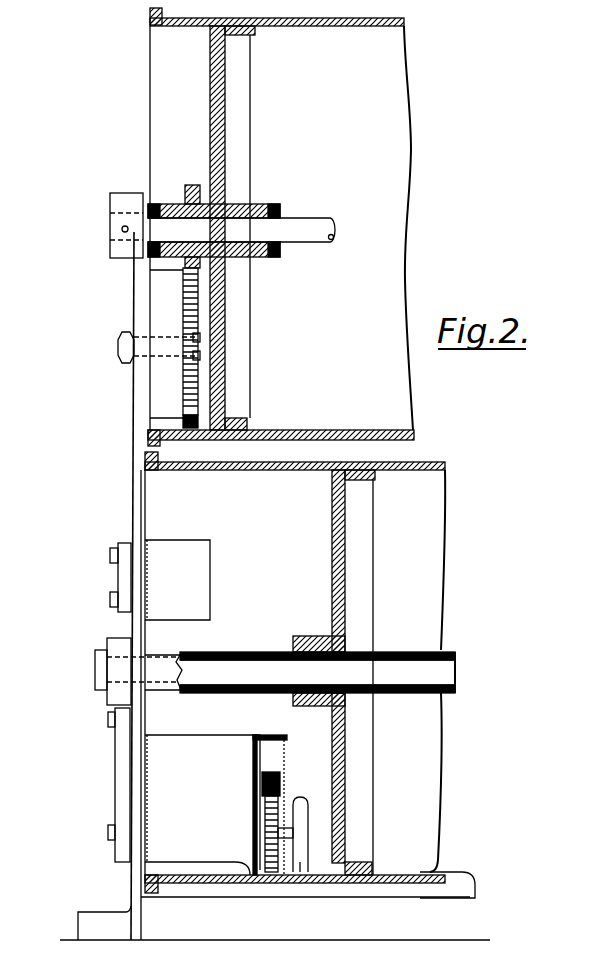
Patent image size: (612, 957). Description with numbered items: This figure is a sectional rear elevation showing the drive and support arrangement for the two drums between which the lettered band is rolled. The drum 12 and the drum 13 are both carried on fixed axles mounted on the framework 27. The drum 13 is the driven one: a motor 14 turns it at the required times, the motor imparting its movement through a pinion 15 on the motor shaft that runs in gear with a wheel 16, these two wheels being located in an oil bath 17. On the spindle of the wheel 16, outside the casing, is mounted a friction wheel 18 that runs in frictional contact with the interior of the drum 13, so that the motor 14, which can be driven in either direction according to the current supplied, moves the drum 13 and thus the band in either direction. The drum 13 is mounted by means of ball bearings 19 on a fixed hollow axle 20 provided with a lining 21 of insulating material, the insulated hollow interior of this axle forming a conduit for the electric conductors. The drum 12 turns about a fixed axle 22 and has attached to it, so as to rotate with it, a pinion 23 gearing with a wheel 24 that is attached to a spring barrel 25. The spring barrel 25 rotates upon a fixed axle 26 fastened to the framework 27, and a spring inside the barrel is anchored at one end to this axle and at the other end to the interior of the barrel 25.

The drum 12 is at (380, 413).
The drum 13 is at (430, 506).
The motor 14 is at (158, 801).
The pinion 15 is at (285, 781).
The wheel 16 is at (272, 882).
The oil bath 17 is at (270, 752).
The friction wheel 18 is at (300, 873).
The ball bearings 19 is at (316, 636).
The fixed hollow axle 20 is at (268, 652).
The lining 21 is at (258, 685).
The fixed axle 22 is at (320, 228).
The pinion 23 is at (190, 185).
The wheel 24 is at (180, 326).
The spring barrel 25 is at (160, 301).
The fixed axle 26 is at (165, 360).
The framework 27 is at (136, 448).